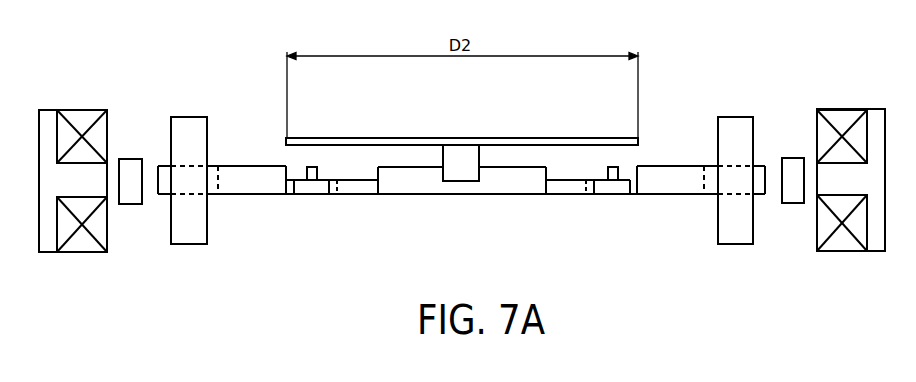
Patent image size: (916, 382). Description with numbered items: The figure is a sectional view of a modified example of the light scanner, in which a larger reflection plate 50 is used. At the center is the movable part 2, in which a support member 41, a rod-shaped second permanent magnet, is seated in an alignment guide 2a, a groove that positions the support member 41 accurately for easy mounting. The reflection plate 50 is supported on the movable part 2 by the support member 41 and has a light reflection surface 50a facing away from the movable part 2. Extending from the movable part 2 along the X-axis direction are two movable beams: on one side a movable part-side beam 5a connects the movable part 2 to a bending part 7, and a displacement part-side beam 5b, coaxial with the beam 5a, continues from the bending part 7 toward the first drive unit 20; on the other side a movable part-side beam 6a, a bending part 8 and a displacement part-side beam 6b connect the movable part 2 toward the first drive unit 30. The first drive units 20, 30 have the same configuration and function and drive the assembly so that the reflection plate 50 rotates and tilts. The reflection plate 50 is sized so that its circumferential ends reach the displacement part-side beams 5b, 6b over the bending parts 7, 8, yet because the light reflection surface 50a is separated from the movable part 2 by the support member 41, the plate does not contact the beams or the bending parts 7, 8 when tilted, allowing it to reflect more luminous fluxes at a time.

The movable part 2 is at (404, 188).
The alignment guide 2a is at (460, 179).
The movable part-side beam 5a is at (358, 188).
The displacement part-side beam 5b is at (251, 177).
The movable part-side beam 6a is at (568, 188).
The displacement part-side beam 6b is at (670, 177).
The bending part 7 is at (311, 204).
The bending part 8 is at (612, 204).
The first drive unit 20 is at (139, 95).
The first drive unit 30 is at (797, 95).
The support member 41 is at (444, 172).
The reflection plate 50 is at (571, 143).
The light reflection surface 50a is at (462, 138).